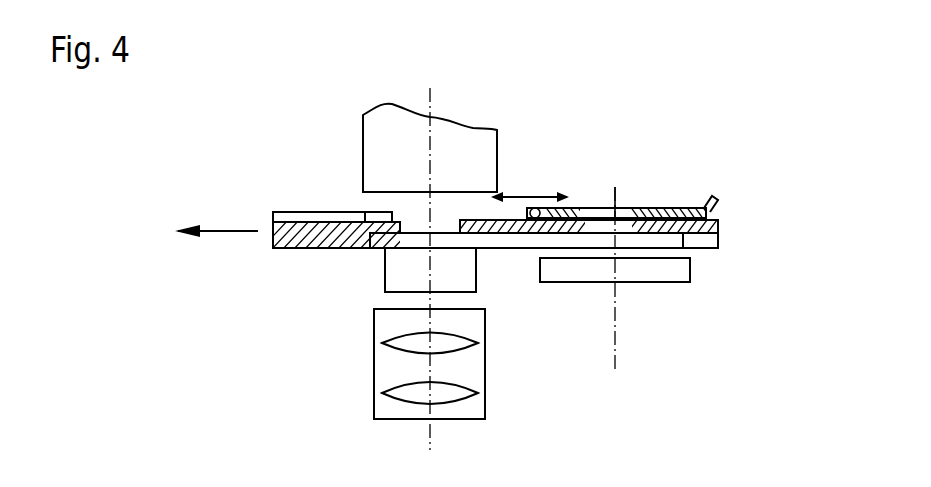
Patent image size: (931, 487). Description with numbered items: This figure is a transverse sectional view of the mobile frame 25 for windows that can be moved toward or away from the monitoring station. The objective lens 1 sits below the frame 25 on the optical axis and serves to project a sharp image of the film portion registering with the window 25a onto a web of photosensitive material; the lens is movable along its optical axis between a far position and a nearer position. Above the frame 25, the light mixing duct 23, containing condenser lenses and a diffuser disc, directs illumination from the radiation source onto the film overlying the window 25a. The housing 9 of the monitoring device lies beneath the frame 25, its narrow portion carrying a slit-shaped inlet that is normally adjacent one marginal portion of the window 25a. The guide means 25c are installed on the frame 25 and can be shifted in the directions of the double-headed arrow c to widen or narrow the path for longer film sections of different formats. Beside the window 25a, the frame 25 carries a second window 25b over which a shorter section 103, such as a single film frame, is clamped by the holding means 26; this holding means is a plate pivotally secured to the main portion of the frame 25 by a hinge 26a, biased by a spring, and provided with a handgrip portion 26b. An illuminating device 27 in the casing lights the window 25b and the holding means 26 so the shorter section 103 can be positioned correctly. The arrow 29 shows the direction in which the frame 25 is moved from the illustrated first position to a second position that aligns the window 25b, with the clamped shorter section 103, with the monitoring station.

The objective lens 1 is at (380, 332).
The housing 9 is at (389, 272).
The light mixing duct 23 is at (497, 147).
The mobile frame 25 is at (300, 248).
The window 25a is at (412, 224).
The second window 25b is at (593, 228).
The guide means 25c is at (273, 213).
The holding means 26 is at (662, 198).
The hinge 26a is at (543, 222).
The handgrip portion 26b is at (716, 206).
The illuminating device 27 is at (690, 280).
The arrow 29 is at (223, 231).
The shorter section 103 is at (622, 199).
The double-headed arrow c is at (535, 196).